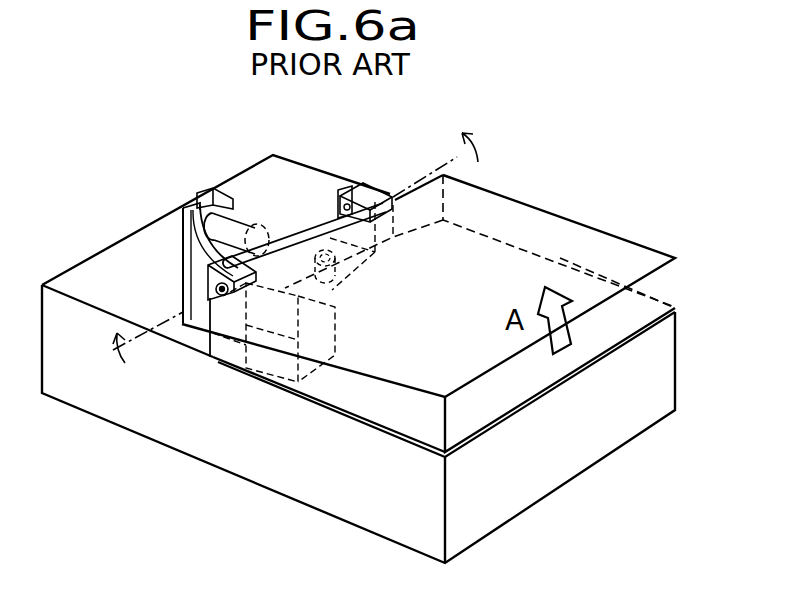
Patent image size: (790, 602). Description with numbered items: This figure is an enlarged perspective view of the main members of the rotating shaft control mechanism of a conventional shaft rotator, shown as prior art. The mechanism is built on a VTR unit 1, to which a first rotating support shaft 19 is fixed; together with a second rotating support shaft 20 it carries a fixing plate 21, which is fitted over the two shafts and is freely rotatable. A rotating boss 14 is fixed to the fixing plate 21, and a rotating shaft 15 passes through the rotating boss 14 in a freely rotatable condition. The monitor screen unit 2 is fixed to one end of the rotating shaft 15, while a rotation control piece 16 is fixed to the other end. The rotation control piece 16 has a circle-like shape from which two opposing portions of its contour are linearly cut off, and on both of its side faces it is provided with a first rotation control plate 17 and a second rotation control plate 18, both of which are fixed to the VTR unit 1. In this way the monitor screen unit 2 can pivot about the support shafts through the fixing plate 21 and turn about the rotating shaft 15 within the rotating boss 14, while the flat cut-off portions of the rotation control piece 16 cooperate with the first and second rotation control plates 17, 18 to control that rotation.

The VTR unit 1 is at (96, 392).
The monitor screen unit 2 is at (553, 223).
The rotating boss 14 is at (277, 232).
The rotating shaft 15 is at (238, 213).
The rotation control piece 16 is at (203, 193).
The first rotation control plate 17 is at (270, 360).
The second rotation control plate 18 is at (327, 353).
The first rotating support shaft 19 is at (222, 287).
The second rotating support shaft 20 is at (347, 184).
The fixing plate 21 is at (376, 190).